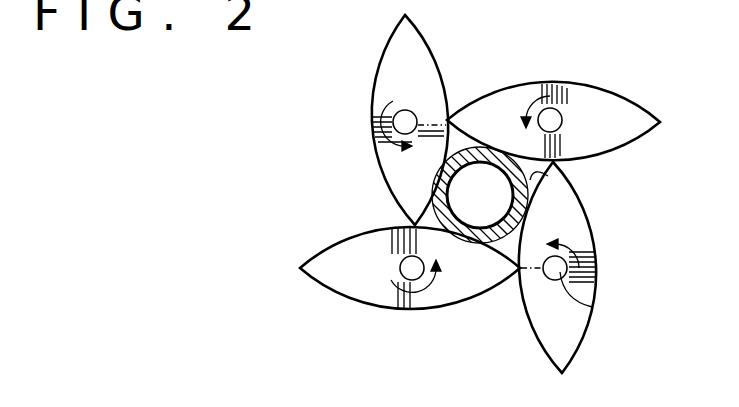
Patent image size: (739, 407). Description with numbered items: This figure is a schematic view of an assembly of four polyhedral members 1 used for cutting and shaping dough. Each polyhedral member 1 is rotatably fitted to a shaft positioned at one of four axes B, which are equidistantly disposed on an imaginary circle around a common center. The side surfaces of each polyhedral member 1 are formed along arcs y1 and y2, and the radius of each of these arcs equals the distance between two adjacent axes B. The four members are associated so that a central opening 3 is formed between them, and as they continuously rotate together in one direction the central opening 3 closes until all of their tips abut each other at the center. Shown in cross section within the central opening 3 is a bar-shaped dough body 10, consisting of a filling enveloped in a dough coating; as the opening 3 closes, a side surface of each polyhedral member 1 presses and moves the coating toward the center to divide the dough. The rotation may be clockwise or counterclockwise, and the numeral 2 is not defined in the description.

The bar-shaped dough body 10 is at (470, 110).
The rotary vane 2 is at (558, 157).
The polyhedral member 1 is at (597, 261).
The central opening 3 is at (500, 286).
The axis B is at (591, 293).
The arc y1 is at (550, 174).
The arc y2 is at (588, 332).